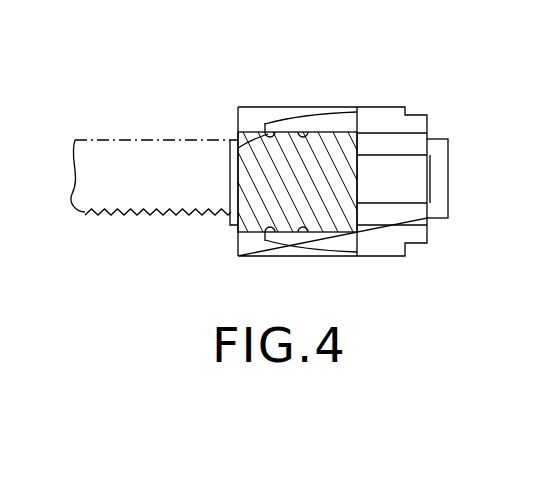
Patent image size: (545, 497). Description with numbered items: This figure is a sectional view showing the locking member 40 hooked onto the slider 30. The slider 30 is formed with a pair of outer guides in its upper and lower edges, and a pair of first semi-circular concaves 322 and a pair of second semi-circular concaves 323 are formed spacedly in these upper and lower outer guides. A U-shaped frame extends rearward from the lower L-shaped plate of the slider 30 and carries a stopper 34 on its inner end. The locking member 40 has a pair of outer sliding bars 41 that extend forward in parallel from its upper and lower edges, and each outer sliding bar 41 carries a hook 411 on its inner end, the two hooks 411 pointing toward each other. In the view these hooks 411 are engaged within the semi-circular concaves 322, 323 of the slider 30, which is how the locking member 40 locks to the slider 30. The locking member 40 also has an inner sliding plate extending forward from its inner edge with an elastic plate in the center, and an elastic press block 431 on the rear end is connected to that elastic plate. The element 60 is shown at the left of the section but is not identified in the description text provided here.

The cable 60 is at (115, 138).
The first semi-circular concaves 322 is at (268, 134).
The hook 411 is at (270, 130).
The second semi-circular concaves 323 is at (306, 133).
The slider 30 is at (318, 150).
The outer sliding bars 41 is at (343, 122).
The stopper 34 is at (437, 175).
The elastic press block 431 is at (400, 193).
The locking member 40 is at (423, 240).